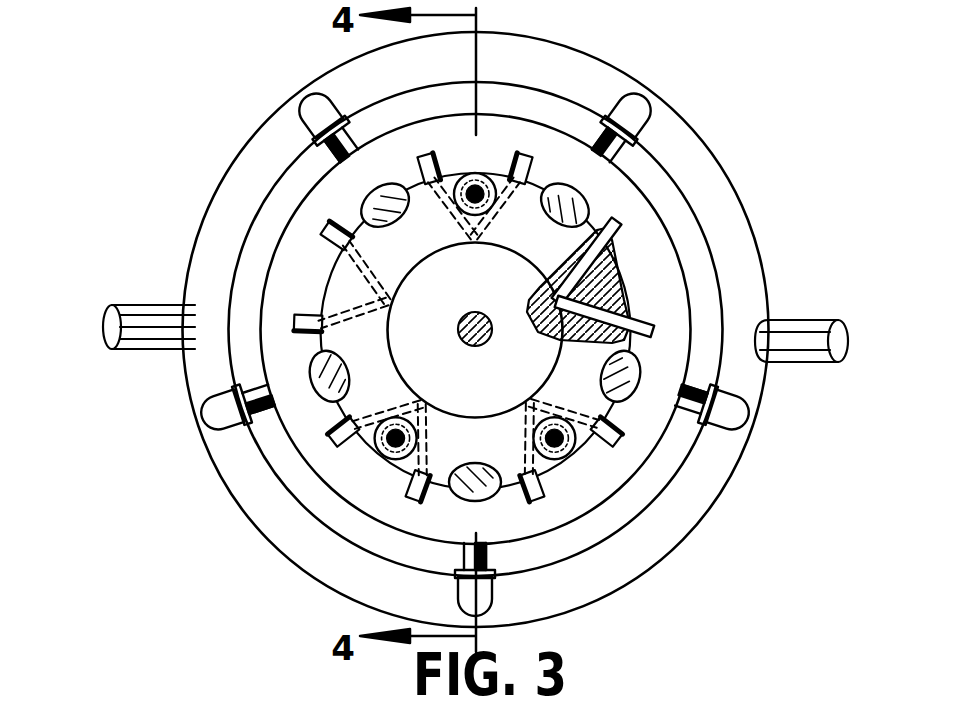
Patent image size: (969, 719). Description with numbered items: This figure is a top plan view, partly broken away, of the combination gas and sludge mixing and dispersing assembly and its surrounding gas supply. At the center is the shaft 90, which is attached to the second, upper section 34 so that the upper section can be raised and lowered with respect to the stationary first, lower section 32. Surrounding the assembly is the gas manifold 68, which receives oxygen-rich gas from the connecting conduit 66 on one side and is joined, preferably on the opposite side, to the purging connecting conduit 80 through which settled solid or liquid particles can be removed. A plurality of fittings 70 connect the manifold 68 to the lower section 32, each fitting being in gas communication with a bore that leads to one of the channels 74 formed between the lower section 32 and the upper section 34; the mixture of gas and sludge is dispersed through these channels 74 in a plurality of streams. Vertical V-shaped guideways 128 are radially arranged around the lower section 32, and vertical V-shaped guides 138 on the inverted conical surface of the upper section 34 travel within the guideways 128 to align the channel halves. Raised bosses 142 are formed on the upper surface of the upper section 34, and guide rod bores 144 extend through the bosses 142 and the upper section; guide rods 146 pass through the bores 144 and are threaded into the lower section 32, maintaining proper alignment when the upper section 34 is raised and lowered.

The first, lower section 32 is at (282, 247).
The second, upper section 34 is at (458, 284).
The connecting conduit 66 is at (168, 350).
The gas manifold 68 is at (228, 178).
The fittings 70 is at (318, 96).
The channels 74 is at (360, 205).
The connecting conduit 80 is at (800, 362).
The shaft 90 is at (460, 334).
The V-shaped guideways 128 is at (300, 312).
The V-shaped guides 138 is at (303, 322).
The raised bosses 142 is at (488, 185).
The guide rod bores 144 is at (464, 190).
The guide rods 146 is at (462, 202).